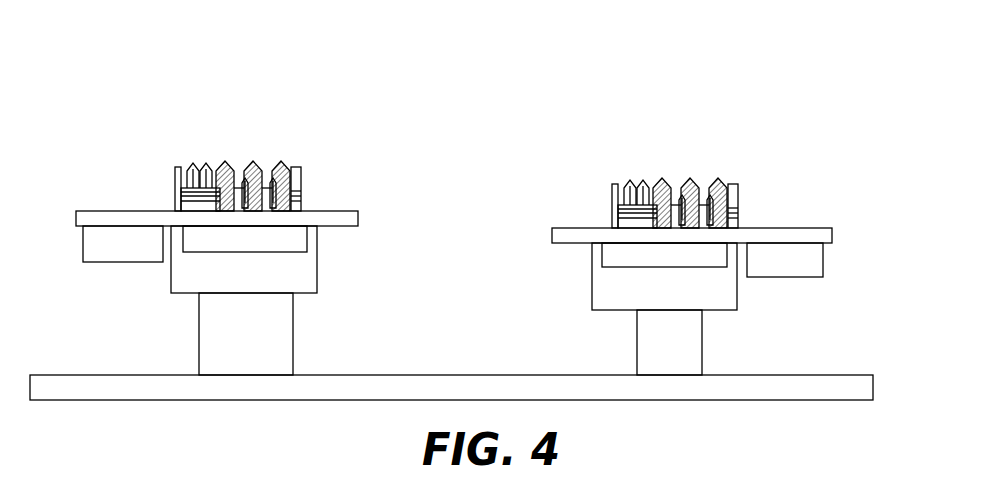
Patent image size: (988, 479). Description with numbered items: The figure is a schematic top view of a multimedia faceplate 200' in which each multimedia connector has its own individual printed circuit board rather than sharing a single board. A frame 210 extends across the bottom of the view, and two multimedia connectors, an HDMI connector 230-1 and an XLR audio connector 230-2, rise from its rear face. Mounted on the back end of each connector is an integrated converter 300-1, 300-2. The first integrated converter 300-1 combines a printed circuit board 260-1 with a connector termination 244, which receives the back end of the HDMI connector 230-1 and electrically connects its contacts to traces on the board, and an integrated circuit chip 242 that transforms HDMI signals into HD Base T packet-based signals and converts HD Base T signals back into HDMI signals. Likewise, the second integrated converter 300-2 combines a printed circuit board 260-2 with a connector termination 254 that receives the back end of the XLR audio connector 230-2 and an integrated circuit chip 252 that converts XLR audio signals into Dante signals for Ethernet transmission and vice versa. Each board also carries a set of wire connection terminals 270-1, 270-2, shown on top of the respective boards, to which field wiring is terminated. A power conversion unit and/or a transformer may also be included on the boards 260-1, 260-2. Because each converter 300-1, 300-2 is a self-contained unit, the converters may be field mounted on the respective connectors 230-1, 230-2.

The multimedia faceplate 200' is at (468, 226).
The frame 210 is at (873, 383).
The HDMI connector 230-1 is at (199, 313).
The XLR audio connector 230-2 is at (703, 323).
The integrated circuit chip 242 is at (300, 237).
The connector termination 244 is at (317, 290).
The integrated circuit chip 252 is at (593, 257).
The connector termination 254 is at (738, 293).
The printed circuit board 260-1 is at (76, 221).
The printed circuit board 260-2 is at (833, 240).
The wire connection terminals 270-1 is at (303, 146).
The wire connection terminals 270-2 is at (735, 186).
The integrated converter 300-1 is at (147, 130).
The integrated converter 300-2 is at (562, 165).